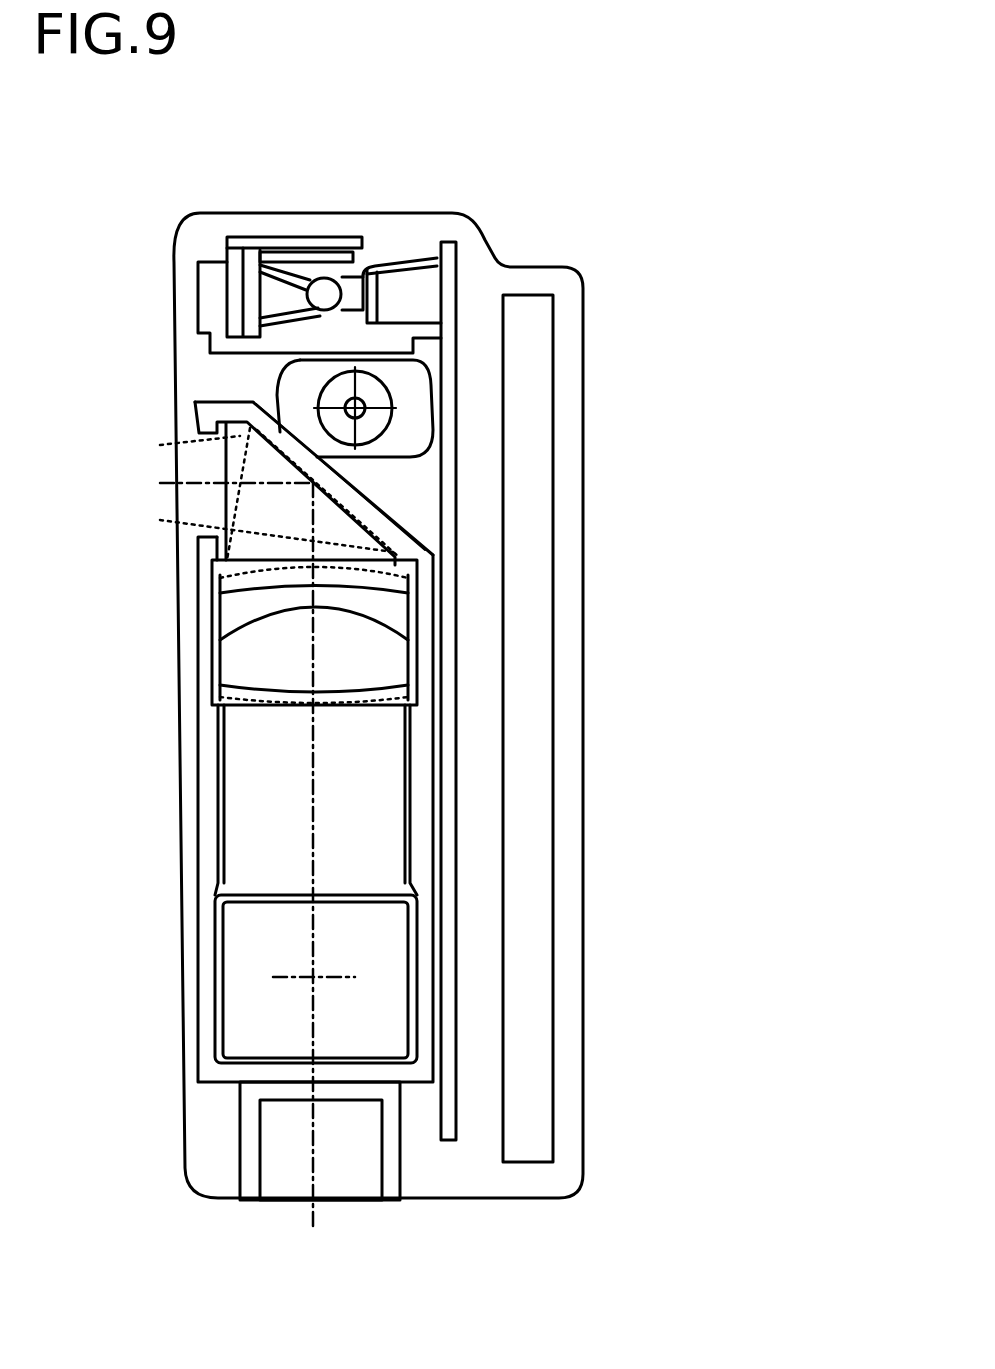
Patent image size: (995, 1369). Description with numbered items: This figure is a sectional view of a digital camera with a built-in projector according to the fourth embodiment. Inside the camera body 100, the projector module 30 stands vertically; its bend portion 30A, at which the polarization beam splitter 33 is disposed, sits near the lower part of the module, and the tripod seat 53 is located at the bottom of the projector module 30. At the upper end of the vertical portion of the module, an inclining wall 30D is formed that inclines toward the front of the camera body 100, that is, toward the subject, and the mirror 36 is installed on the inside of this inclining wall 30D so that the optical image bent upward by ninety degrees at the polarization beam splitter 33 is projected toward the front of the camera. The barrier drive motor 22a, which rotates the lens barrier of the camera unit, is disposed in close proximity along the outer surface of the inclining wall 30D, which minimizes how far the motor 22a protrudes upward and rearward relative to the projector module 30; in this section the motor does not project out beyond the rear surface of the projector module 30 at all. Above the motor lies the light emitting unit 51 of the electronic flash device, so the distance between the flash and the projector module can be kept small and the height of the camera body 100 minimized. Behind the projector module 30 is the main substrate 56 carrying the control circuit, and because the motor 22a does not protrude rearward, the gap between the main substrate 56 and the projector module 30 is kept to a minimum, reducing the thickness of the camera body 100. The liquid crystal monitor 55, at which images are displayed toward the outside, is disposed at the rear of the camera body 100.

The camera body 100 is at (598, 275).
The light emitting unit 51 is at (243, 236).
The barrier drive motor 22a is at (412, 398).
The inclining wall 30D is at (367, 493).
The mirror 36 is at (367, 530).
The main substrate 56 is at (456, 655).
The liquid crystal monitor 55 is at (528, 850).
The projector module 30 is at (197, 712).
The bend portion 30A is at (238, 963).
The polarization beam splitter 33 is at (413, 982).
The tripod seat 53 is at (287, 1188).